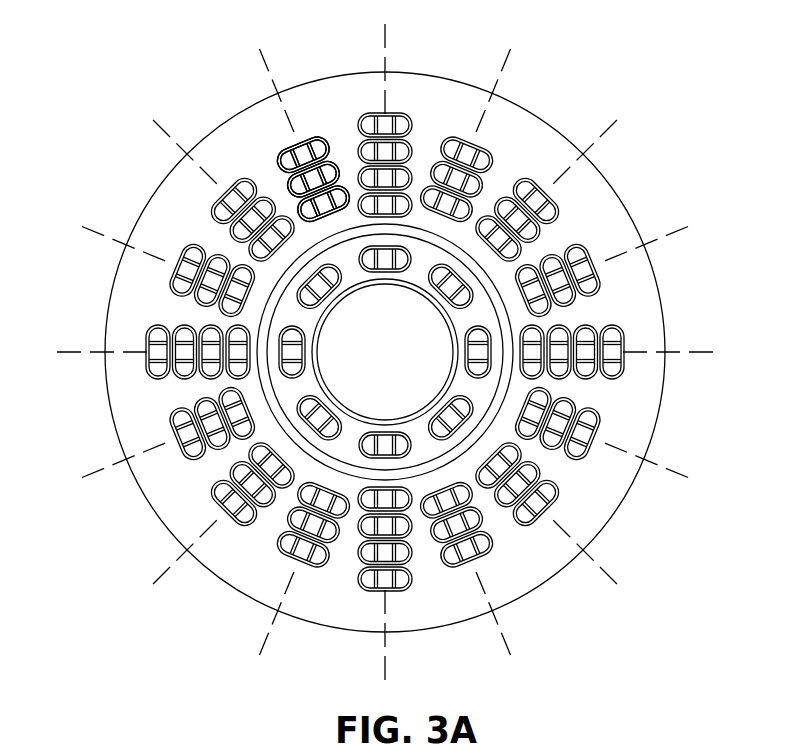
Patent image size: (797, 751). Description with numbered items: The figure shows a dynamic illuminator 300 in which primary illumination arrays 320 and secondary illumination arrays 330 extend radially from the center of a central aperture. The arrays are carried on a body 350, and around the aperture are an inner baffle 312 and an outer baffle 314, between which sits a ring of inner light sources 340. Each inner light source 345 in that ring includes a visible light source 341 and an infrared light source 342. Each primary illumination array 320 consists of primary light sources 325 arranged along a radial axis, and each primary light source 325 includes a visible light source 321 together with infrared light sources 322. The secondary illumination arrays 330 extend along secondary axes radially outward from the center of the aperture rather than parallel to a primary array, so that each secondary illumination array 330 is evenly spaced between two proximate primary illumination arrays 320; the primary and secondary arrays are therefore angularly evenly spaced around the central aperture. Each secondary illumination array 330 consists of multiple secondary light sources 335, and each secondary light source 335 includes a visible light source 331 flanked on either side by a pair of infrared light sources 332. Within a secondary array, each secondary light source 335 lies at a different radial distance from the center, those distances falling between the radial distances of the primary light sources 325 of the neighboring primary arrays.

The dynamic illuminator 300 is at (195, 47).
The inner baffle 312 is at (397, 435).
The outer baffle 314 is at (338, 460).
The primary illumination array 320 is at (400, 108).
The visible light source 321 is at (380, 114).
The infrared light source 322 is at (372, 114).
The primary light source 325 is at (420, 119).
The secondary illumination array 330 is at (276, 138).
The visible light source 331 is at (278, 138).
The infrared light source 332 is at (282, 148).
The secondary light source 335 is at (258, 166).
The ring of inner light sources 340 is at (316, 352).
The visible light source 341 is at (473, 352).
The infrared light source 342 is at (470, 338).
The inner light source 345 is at (312, 329).
The body 350 is at (640, 313).